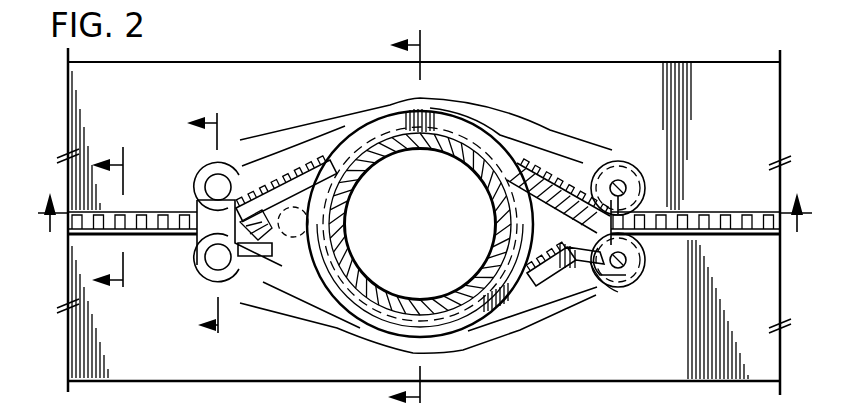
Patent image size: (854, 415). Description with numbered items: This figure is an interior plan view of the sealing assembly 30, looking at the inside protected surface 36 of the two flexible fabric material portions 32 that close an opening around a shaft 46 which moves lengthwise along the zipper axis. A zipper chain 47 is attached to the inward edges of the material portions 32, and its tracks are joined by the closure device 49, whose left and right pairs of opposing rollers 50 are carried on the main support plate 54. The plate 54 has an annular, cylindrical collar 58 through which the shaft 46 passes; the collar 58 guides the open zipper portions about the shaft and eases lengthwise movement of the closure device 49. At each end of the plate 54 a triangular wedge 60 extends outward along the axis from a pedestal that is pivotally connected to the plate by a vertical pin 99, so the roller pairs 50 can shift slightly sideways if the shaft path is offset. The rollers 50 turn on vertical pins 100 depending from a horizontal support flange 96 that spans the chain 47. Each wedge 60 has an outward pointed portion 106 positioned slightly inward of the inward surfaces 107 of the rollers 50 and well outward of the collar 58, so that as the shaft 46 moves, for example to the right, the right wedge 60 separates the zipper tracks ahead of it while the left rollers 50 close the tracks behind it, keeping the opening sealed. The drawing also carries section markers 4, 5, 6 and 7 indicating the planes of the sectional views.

The sealing assembly 30 is at (548, 76).
The material portions 32 is at (722, 112).
The inside protected surface 36 is at (677, 70).
The shaft 46 is at (500, 153).
The zipper chain 47 is at (720, 216).
The closure device 49 is at (184, 268).
The rollers 50 is at (195, 276).
The main support plate 54 is at (300, 176).
The annular collar 58 is at (457, 120).
The wedges 60 is at (262, 190).
The support flange 96 is at (200, 233).
The vertical pin 99 is at (557, 168).
The vertical pins 100 is at (213, 265).
The outward pointed portion 106 is at (582, 281).
The inward surfaces 107 is at (612, 165).
The section line 4- 4 is at (425, 203).
The section line 5- 5 is at (411, 220).
The section line 6- 6 is at (209, 225).
The section line 7- 7 is at (114, 225).